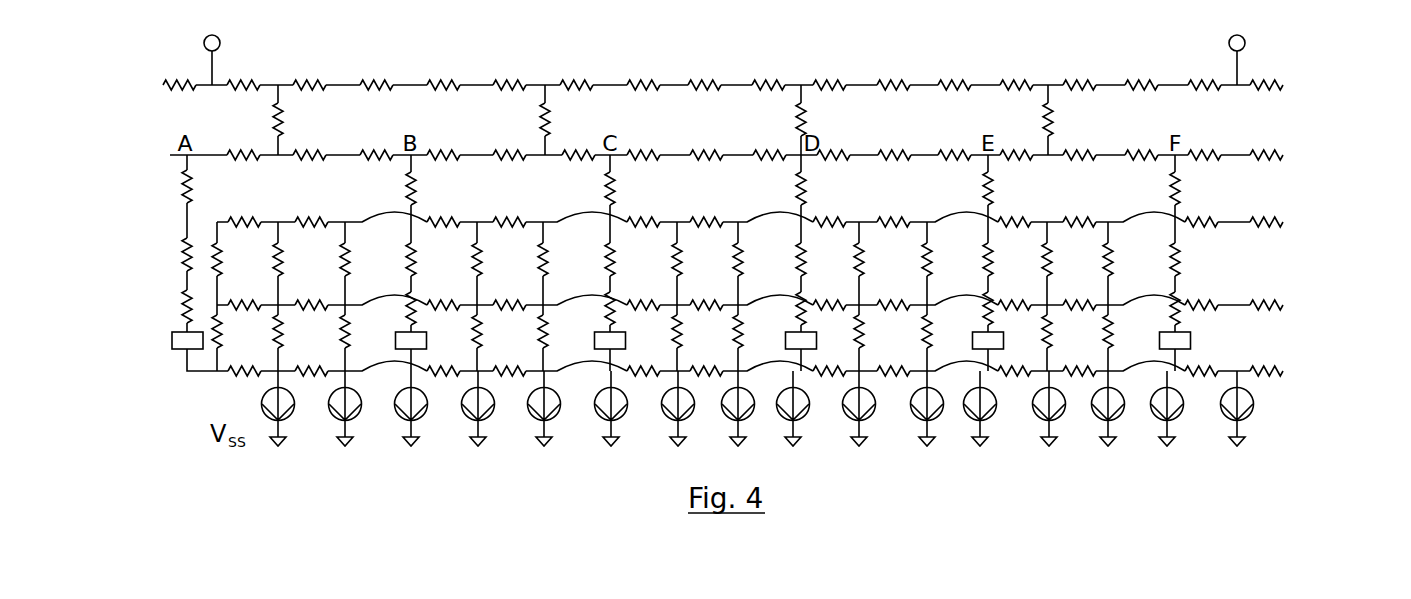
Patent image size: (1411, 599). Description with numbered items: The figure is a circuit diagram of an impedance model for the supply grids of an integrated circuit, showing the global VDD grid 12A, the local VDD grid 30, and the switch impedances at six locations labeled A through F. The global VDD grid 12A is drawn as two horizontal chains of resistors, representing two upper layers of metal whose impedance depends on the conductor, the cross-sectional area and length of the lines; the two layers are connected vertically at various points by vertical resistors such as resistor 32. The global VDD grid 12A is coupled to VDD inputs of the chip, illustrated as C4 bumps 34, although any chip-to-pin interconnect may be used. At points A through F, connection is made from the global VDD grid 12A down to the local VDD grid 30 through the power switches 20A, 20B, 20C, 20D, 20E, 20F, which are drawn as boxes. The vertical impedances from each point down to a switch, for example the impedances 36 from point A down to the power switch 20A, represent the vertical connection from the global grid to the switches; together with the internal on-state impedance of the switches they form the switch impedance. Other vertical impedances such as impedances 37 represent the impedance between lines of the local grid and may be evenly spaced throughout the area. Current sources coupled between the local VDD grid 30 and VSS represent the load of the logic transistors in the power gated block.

The global VDD grid 12A is at (1290, 67).
The local VDD grid 30 is at (1290, 200).
The resistor 32 is at (1045, 106).
The C4 bumps 34 is at (1228, 42).
The impedances 36 is at (183, 293).
The impedances 37 is at (346, 312).
The power switch 20A is at (172, 347).
The power switch 20B is at (432, 321).
The power switch 20C is at (623, 332).
The power switch 20D is at (808, 331).
The power switch 20E is at (993, 331).
The power switch 20F is at (1180, 331).